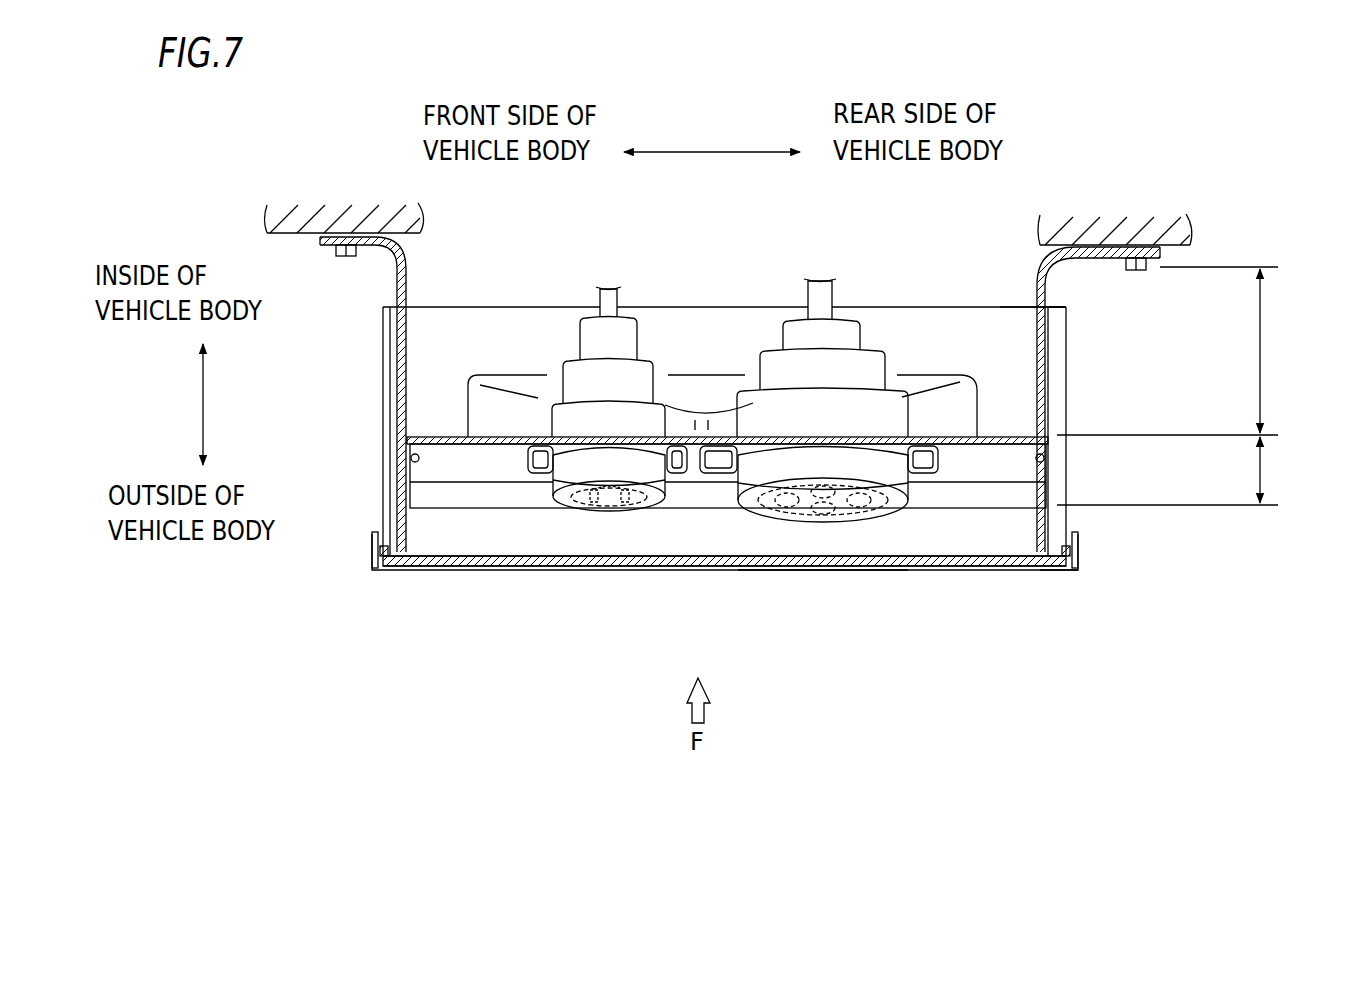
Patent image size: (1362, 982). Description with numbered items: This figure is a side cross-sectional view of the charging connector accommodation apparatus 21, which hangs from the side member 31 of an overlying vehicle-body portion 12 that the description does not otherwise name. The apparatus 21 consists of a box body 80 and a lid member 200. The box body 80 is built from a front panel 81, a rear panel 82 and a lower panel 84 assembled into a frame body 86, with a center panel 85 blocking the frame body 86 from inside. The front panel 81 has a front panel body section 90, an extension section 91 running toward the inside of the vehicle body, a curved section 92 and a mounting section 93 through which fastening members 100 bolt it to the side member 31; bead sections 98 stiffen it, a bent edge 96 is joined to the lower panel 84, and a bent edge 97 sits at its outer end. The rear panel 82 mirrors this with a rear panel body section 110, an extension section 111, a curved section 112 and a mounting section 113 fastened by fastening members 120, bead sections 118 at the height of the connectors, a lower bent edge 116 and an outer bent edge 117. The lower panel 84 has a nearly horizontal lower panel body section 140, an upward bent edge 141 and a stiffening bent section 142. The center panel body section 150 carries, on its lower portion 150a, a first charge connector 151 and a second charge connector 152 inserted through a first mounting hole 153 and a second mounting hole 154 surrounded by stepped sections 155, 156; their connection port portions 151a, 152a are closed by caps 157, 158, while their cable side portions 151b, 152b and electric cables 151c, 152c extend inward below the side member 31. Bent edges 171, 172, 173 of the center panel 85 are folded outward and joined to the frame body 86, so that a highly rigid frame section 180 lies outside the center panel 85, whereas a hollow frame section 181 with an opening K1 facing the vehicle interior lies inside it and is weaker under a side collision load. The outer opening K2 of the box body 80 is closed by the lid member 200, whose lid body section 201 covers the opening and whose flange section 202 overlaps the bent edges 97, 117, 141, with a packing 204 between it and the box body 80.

The vehicle roof 12 is at (1197, 191).
The side member 31 is at (1192, 224).
The charging connector accommodation apparatus 21 is at (403, 620).
The box body 80 is at (381, 322).
The front panel 81 is at (400, 495).
The rear panel 82 is at (1050, 514).
The lower panel 84 is at (978, 320).
The center panel 85 is at (1008, 436).
The frame body 86 is at (1058, 366).
The front panel body section 90 is at (390, 392).
The extension section 91 is at (408, 288).
The curved section 92 is at (408, 250).
The mounting section 93 is at (346, 236).
The bent edge 96 is at (390, 430).
The bent edge 97 is at (372, 540).
The bead sections 98 is at (390, 355).
The fastening members 100 is at (344, 258).
The rear panel body section 110 is at (1049, 343).
The extension section 111 is at (1037, 292).
The curved section 112 is at (1040, 262).
The mounting section 113 is at (1100, 240).
The bent edge 116 is at (1058, 391).
The bent edge 117 is at (1078, 540).
The bead sections 118 is at (1058, 330).
The fastening members 120 is at (1140, 284).
The lower panel body section 140 is at (714, 323).
The bent edge 141 is at (974, 568).
The bent section 142 is at (923, 373).
The center panel body section 150 is at (442, 434).
The lower portion 150a is at (478, 466).
The first charge connector 151 is at (853, 466).
The connection port portion 151a is at (800, 516).
The cable side portion 151b is at (872, 375).
The electric cable 151c is at (807, 284).
The second charge connector 152 is at (583, 470).
The connection port portion 152a is at (630, 500).
The cable side portion 152b is at (643, 373).
The electric cable 152c is at (600, 297).
The first mounting hole 153 is at (892, 460).
The second mounting hole 154 is at (662, 508).
The stepped section 155 is at (910, 468).
The stepped section 156 is at (536, 484).
The cap 157 is at (752, 508).
The cap 158 is at (603, 510).
The bent edge 171 is at (1018, 494).
The bent edge 172 is at (413, 460).
The bent edge 173 is at (1043, 462).
The highly rigid frame section 180 is at (1262, 469).
The hollow frame section 181 is at (1262, 346).
The lid member 200 is at (512, 570).
The lid body section 201 is at (878, 572).
The flange section 202 is at (1070, 562).
The packing 204 is at (1062, 572).
The opening K1 is at (747, 243).
The vehicle-body outer side opening K2 is at (819, 538).